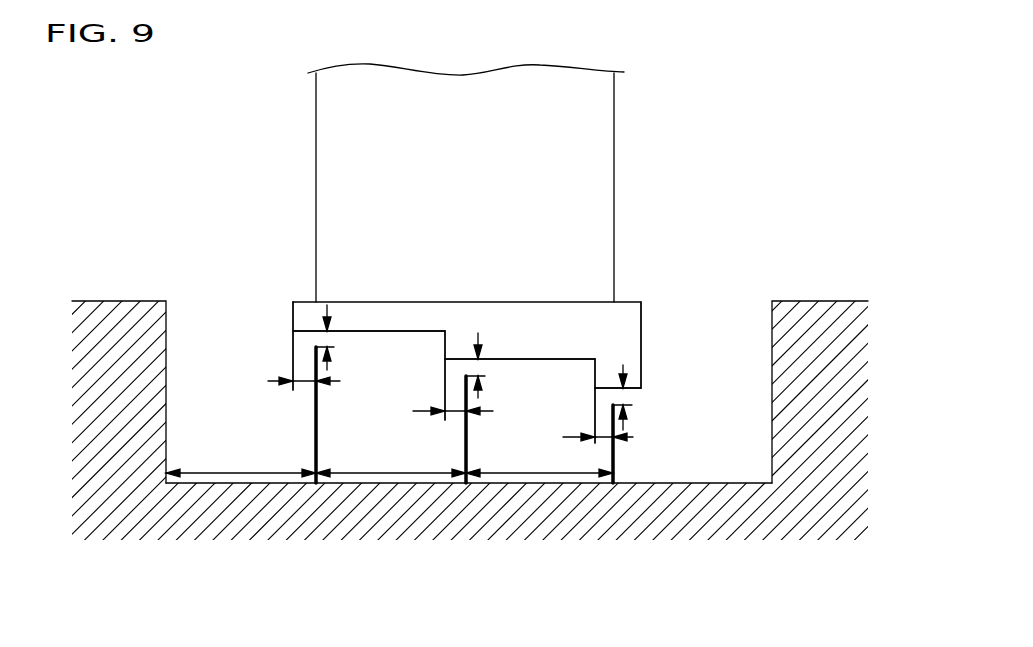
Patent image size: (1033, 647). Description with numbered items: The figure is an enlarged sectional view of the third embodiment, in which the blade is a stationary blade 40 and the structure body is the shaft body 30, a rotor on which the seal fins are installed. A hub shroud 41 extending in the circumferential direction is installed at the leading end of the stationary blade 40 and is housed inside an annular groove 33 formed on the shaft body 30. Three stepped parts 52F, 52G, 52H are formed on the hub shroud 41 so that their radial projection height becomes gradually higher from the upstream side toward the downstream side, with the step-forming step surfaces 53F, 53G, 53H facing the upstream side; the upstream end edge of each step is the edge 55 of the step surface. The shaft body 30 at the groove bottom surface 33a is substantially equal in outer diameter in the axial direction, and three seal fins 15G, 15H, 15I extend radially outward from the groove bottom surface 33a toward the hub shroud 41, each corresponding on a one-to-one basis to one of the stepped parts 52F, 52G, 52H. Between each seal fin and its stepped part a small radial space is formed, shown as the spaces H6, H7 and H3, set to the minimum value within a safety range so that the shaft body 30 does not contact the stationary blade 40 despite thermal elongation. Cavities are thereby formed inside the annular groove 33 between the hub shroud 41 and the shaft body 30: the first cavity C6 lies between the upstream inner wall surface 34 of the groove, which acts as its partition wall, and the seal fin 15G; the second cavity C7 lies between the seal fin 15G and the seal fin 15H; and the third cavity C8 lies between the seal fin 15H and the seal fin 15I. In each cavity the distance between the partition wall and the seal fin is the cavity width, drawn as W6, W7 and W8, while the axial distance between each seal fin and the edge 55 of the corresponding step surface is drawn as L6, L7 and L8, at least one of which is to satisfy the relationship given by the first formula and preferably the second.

The shaft body 30 is at (830, 325).
The annular groove 33 is at (772, 483).
The groove bottom surface 33a is at (688, 483).
The inner wall surface 34 is at (170, 377).
The stationary blade 40 is at (615, 150).
The hub shroud 41 is at (632, 302).
The stepped part 52F is at (362, 340).
The stepped part 52G is at (502, 368).
The stepped part 52H is at (650, 402).
The step surface 53F is at (292, 313).
The step surface 53G is at (445, 360).
The step surface 53H is at (595, 388).
The edge of the step surface 55 is at (292, 317).
The seal fin 15G is at (318, 447).
The seal fin 15H is at (468, 447).
The seal fin 15I is at (616, 458).
The cavity width W6 is at (241, 461).
The cavity width W7 is at (391, 461).
The cavity width W8 is at (539, 461).
The distance L6 is at (305, 390).
The distance L7 is at (453, 412).
The distance L8 is at (608, 436).
The small space H6 is at (333, 347).
The small space H7 is at (484, 366).
The height H3 is at (631, 406).
The first cavity C6 is at (190, 432).
The second cavity C7 is at (437, 437).
The third cavity C8 is at (587, 460).